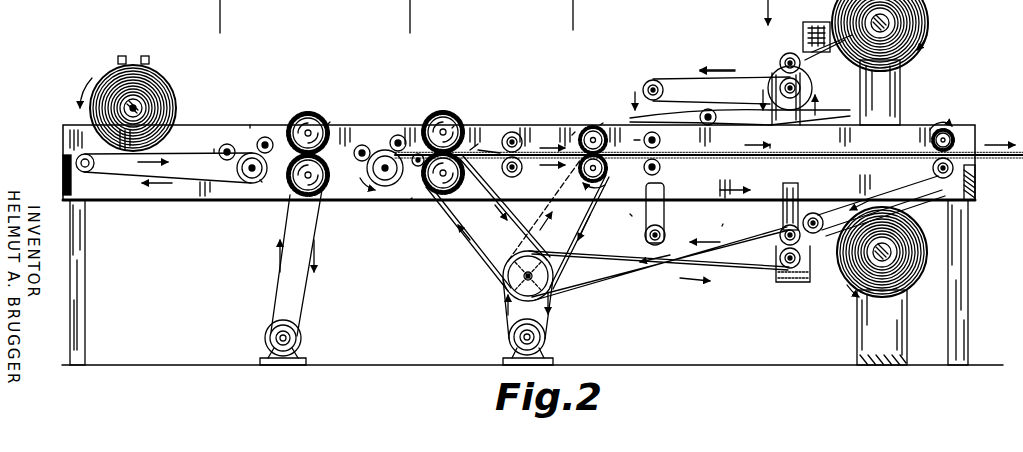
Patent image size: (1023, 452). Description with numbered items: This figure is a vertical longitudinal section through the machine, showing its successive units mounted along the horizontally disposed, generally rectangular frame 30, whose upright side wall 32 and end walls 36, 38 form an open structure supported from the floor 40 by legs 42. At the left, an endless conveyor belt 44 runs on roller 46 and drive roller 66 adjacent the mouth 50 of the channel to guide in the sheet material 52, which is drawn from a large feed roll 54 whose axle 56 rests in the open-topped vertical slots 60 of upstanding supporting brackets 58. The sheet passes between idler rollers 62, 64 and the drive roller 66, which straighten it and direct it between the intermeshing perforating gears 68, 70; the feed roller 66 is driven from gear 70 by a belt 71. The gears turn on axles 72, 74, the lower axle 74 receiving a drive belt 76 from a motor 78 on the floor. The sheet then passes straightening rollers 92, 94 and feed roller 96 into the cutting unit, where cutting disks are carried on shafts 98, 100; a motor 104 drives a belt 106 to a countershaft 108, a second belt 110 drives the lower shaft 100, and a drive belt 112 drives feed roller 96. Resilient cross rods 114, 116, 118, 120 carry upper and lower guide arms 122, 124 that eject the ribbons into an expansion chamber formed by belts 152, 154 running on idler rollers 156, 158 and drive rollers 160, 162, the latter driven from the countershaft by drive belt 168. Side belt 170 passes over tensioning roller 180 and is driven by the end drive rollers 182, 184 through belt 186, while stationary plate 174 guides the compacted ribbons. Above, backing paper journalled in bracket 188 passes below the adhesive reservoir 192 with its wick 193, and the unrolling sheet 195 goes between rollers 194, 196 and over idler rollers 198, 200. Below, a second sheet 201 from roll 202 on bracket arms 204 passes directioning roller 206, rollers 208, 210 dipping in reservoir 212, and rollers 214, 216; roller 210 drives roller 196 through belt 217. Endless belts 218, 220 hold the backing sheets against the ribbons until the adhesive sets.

The frame 30 is at (386, 115).
The side wall 32 is at (250, 128).
The end wall 36 is at (63, 176).
The end wall 38 is at (975, 192).
The floor 40 is at (172, 355).
The legs 42 is at (86, 268).
The conveyor belt 44 is at (200, 152).
The roller 46 is at (96, 172).
The mouth 50 is at (63, 136).
The sheet material 52 is at (214, 150).
The feed roll 54 is at (178, 94).
The axle 56 is at (141, 102).
The supporting brackets 58 is at (146, 56).
The vertical slots 60 is at (133, 56).
The idler roller 62 is at (229, 144).
The idler roller 64 is at (267, 137).
The drive roller 66 is at (247, 183).
The perforating gear 68 is at (327, 125).
The perforating gear 70 is at (378, 186).
The belt 71 is at (262, 181).
The axle 72 is at (308, 111).
The axle 74 is at (309, 197).
The drive belt 76 is at (318, 216).
The motor 78 is at (302, 332).
The straightening roller 92 is at (362, 145).
The straightening roller 94 is at (399, 135).
The feed roller 96 is at (414, 167).
The shaft 98 is at (452, 128).
The shaft 100 is at (438, 200).
The motor 104 is at (548, 340).
The belt 106 is at (550, 305).
The countershaft 108 is at (524, 279).
The belt 110 is at (503, 268).
The drive belt 112 is at (410, 200).
The cross rod 114 is at (443, 110).
The cross rod 116 is at (478, 144).
The cross rod 118 is at (440, 194).
The cross rod 120 is at (490, 208).
The guide arms 122 is at (518, 134).
The guide arms 124 is at (536, 190).
The belt 152 is at (578, 135).
The belt 154 is at (583, 183).
The idler roller 156 is at (572, 135).
The idler roller 158 is at (512, 177).
The drive roller 160 is at (600, 125).
The drive roller 162 is at (606, 190).
The drive belt 168 is at (630, 214).
The side belt 170 is at (690, 102).
The stationary plate 174 is at (629, 135).
The tensioning roller 180 is at (712, 110).
The drive roller 182 is at (957, 136).
The drive roller 184 is at (955, 172).
The belt 186 is at (745, 280).
The supporting bracket 188 is at (900, 80).
The reservoir 192 is at (805, 105).
The wick 193 is at (803, 50).
The roller 194 is at (780, 62).
The unrolling sheet 195 is at (728, 66).
The roller 196 is at (805, 90).
The idler roller 198 is at (652, 79).
The idler roller 200 is at (660, 140).
The second sheet 201 is at (722, 226).
The roll of paper 202 is at (928, 252).
The bracket arms 204 is at (857, 345).
The directioning roller 206 is at (812, 262).
The roller 208 is at (781, 234).
The adhesive roller 210 is at (781, 258).
The reservoir 212 is at (795, 280).
The directing roller 214 is at (665, 228).
The contacting roller 216 is at (660, 172).
The belt 217 is at (798, 186).
The endless belt 218 is at (752, 130).
The endless belt 220 is at (880, 160).